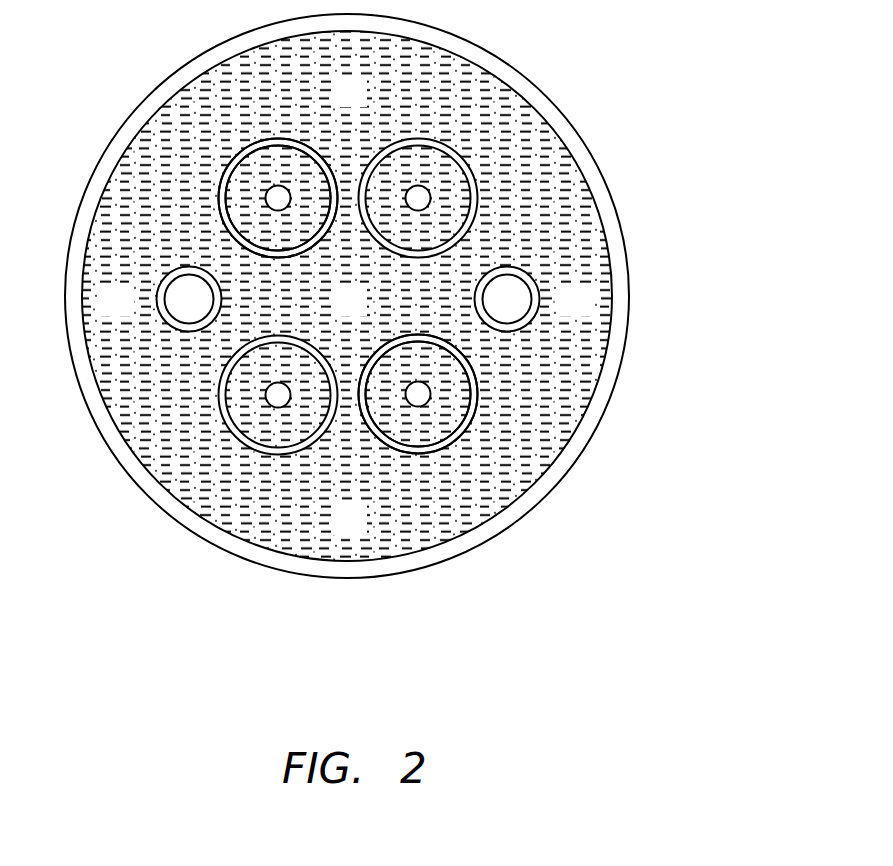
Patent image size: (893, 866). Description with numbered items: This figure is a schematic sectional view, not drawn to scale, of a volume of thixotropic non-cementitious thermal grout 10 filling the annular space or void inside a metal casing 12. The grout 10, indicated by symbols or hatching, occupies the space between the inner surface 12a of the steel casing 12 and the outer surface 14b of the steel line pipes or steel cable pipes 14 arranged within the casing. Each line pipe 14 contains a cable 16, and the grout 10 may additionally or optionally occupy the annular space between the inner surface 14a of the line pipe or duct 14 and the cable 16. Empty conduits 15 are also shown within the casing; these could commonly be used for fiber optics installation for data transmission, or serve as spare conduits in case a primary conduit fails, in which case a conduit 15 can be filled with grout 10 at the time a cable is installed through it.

The thixotropic non-cementitious thermal grout 10 is at (361, 531).
The steel casing 12 is at (537, 95).
The inner surface of casing 12a is at (458, 50).
The steel line pipe 14 is at (474, 372).
The inner surface of line pipe 14a is at (470, 412).
The outer surface of line pipe 14b is at (470, 427).
The empty conduit 15 is at (532, 278).
The cable 16 is at (417, 407).